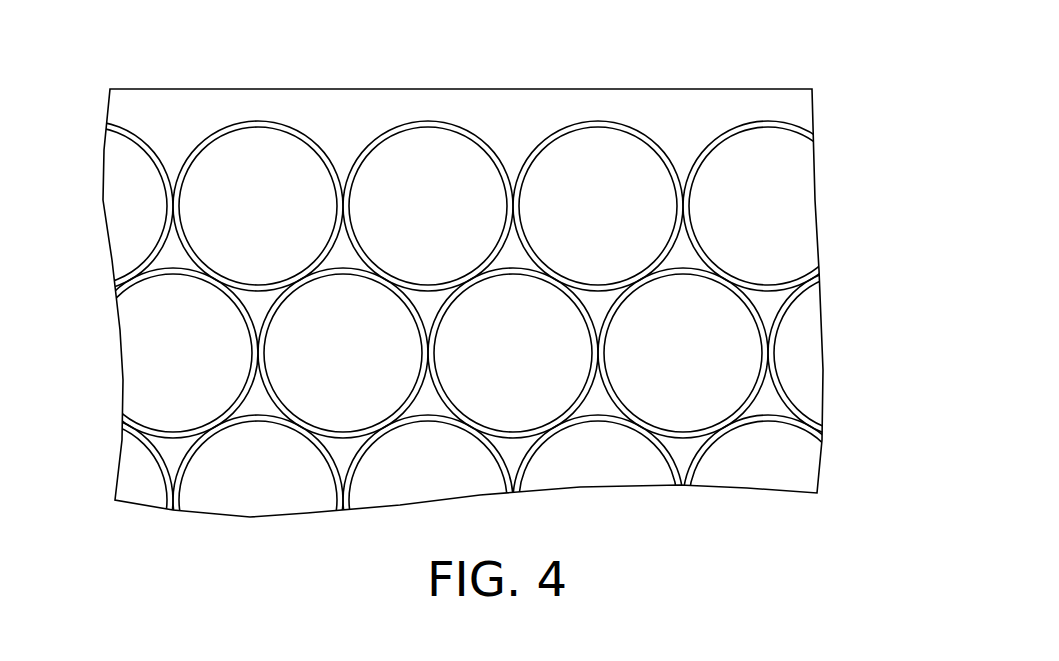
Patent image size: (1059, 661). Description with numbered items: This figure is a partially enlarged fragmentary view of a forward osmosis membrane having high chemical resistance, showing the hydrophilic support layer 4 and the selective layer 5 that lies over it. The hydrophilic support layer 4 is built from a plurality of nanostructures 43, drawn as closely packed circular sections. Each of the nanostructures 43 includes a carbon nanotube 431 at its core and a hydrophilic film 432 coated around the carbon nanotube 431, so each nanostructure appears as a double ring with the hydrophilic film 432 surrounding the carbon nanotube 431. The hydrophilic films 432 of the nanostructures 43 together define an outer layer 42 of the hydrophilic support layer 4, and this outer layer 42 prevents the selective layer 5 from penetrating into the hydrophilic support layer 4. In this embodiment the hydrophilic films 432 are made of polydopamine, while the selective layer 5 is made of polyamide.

The hydrophilic support layer 4 is at (480, 307).
The selective layer 5 is at (522, 108).
The outer layer 42 is at (635, 130).
The nanostructures 43 is at (483, 353).
The carbon nanotube 431 is at (633, 217).
The hydrophilic film 432 is at (593, 290).